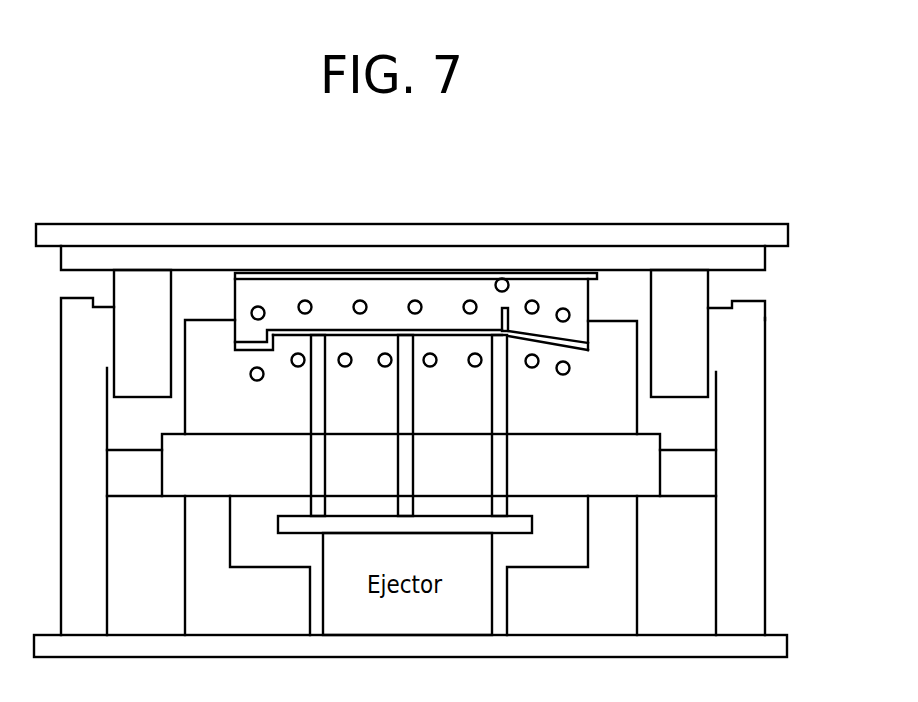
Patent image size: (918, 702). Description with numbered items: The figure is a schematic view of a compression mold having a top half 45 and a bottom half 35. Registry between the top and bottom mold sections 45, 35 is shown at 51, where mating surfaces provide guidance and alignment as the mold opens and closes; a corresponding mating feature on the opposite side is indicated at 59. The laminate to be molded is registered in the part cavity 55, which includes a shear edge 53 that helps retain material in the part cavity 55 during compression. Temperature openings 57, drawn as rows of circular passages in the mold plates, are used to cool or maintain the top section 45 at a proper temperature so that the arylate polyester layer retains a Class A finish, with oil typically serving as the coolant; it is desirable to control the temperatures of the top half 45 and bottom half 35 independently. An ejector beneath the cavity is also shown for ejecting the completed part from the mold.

The top half 45 is at (788, 240).
The registry 51 is at (115, 303).
The shear edge 53 is at (238, 330).
The part cavity 55 is at (443, 327).
The temperature openings 57 is at (537, 305).
The right mold side wall step 59 is at (748, 298).
The bottom half 35 is at (766, 347).